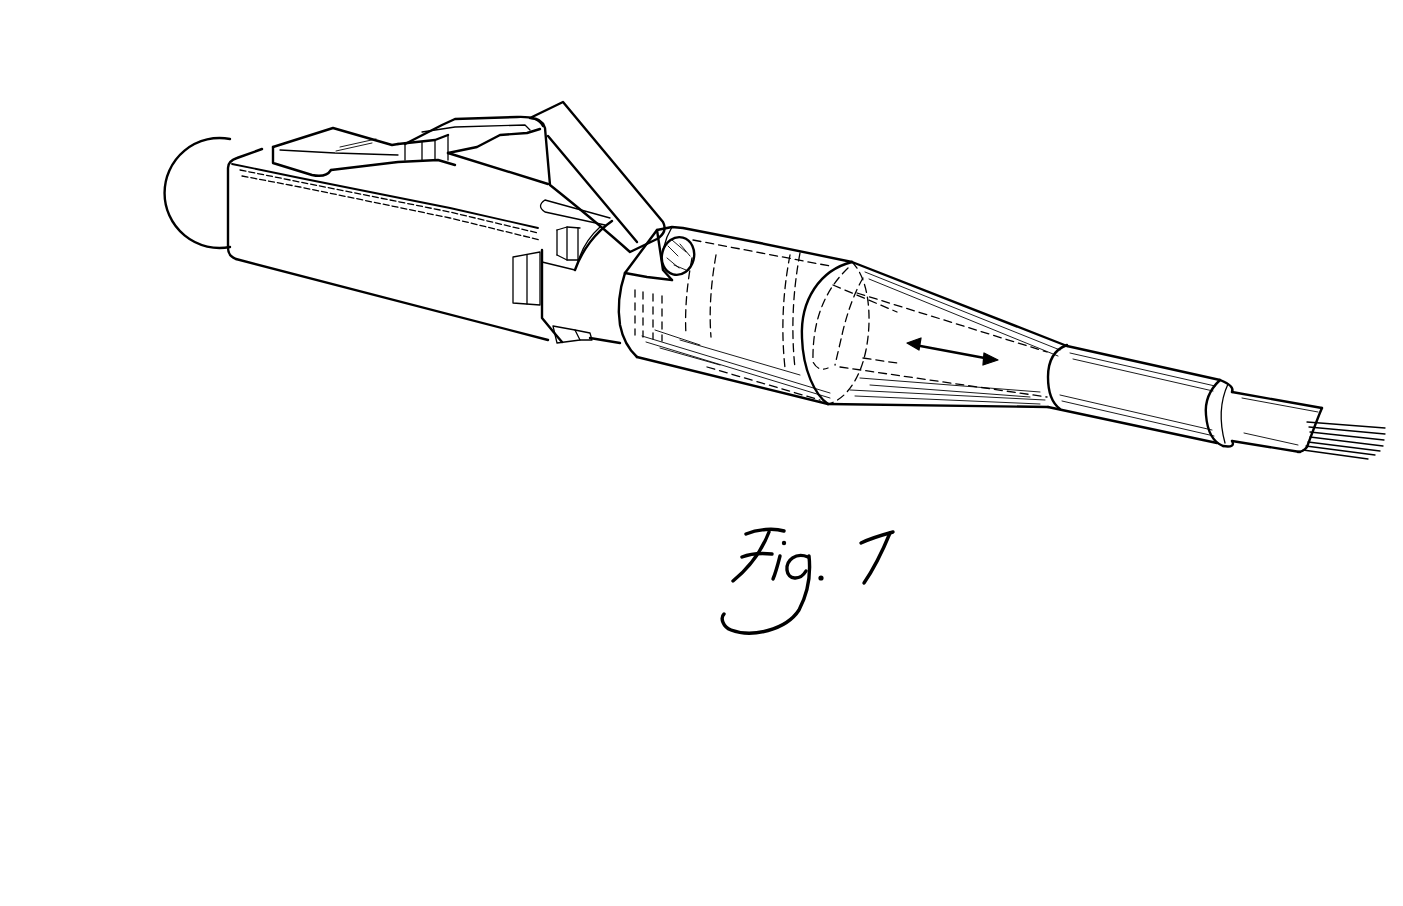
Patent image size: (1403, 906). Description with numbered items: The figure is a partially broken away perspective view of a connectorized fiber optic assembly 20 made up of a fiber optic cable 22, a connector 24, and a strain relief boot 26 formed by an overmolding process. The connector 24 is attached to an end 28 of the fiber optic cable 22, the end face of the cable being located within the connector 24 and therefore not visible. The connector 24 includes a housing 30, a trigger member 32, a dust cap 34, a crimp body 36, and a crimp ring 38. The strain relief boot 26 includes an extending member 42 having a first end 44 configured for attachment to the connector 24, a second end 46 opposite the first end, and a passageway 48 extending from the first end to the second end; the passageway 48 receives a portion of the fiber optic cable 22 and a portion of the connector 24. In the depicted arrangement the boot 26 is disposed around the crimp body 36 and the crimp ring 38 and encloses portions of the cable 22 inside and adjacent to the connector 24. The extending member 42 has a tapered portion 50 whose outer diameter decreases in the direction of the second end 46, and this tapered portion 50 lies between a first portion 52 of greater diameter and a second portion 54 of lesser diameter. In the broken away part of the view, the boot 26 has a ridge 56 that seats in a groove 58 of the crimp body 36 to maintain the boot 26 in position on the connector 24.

The connectorized fiber optic assembly 20 is at (736, 297).
The fiber optic cable 22 is at (1298, 367).
The connector 24 is at (450, 266).
The strain relief boot 26 is at (947, 382).
The end of fiber optic cable 28 is at (954, 295).
The housing 30 is at (383, 250).
The trigger member 32 is at (581, 306).
The dust cap 34 is at (159, 193).
The crimp body 36 is at (758, 244).
The crimp ring 38 is at (773, 281).
The extending member 42 is at (849, 372).
The first end 44 is at (735, 336).
The second end 46 is at (1199, 450).
The passageway 48 is at (943, 291).
The tapered portion 50 is at (950, 434).
The first portion 52 is at (736, 406).
The second portion 54 is at (1134, 424).
The ridge 56 is at (691, 204).
The groove 58 is at (676, 193).